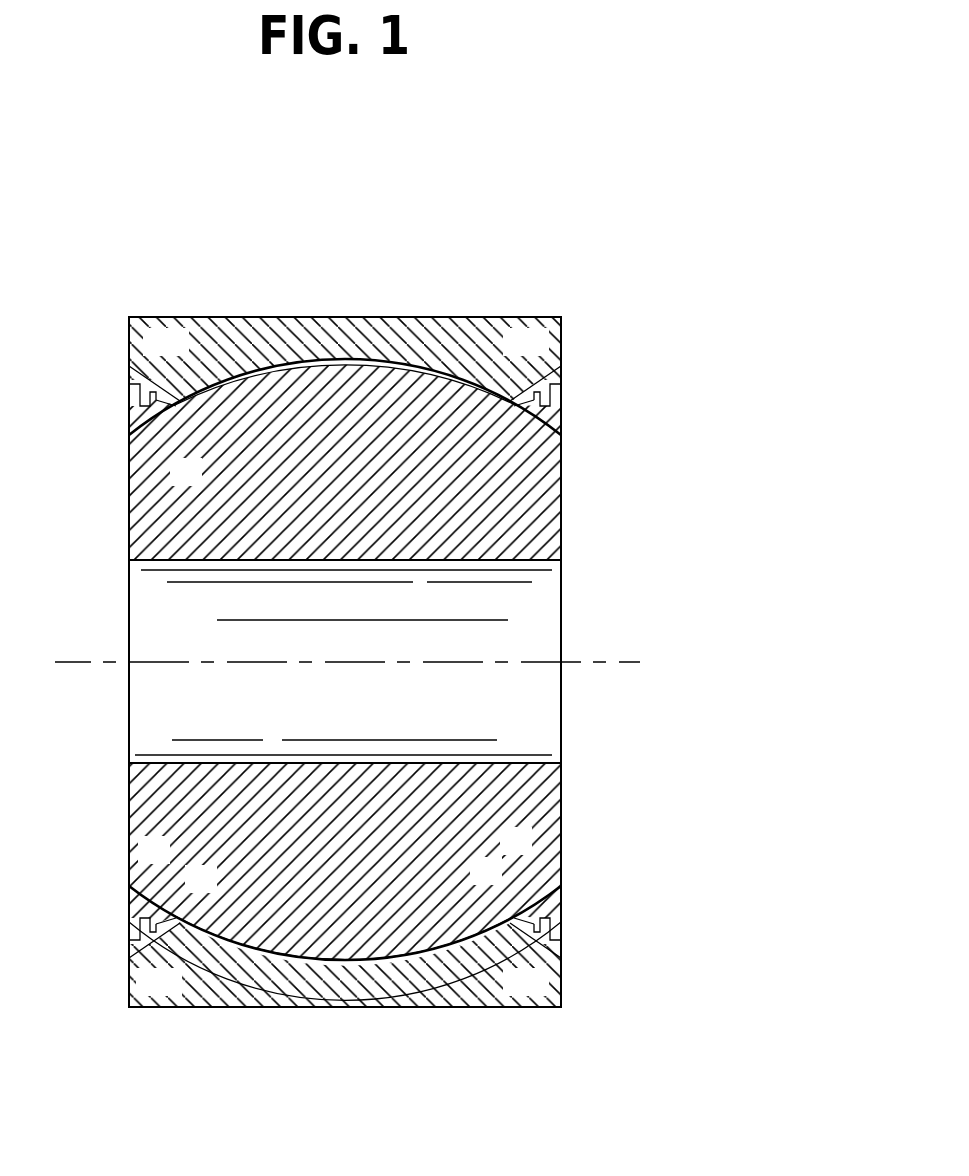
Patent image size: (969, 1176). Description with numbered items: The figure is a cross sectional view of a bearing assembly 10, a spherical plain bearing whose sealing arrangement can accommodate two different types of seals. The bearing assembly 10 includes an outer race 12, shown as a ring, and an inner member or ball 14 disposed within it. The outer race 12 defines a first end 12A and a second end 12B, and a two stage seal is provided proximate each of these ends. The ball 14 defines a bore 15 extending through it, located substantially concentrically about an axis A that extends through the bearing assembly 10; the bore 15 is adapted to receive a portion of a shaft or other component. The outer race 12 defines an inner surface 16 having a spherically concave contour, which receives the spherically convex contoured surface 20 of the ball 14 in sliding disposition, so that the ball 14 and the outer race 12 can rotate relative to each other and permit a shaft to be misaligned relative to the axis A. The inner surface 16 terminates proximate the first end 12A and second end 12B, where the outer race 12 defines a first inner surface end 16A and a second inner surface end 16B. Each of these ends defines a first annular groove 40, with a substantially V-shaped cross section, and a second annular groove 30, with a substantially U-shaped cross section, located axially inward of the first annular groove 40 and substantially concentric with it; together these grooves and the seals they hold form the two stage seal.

The bearing assembly 10 is at (336, 200).
The outer race 12 is at (468, 318).
The first end 12A is at (110, 324).
The second end 12B is at (585, 322).
The ball 14 is at (561, 498).
The bore 15 is at (594, 602).
The inner surface 16 is at (300, 364).
The first inner surface end 16A is at (180, 364).
The second inner surface end 16B is at (550, 362).
The spherically convex contoured surface 20 is at (547, 418).
The second annular groove 30 is at (556, 386).
The first annular groove 40 is at (562, 388).
The axis A is at (333, 661).